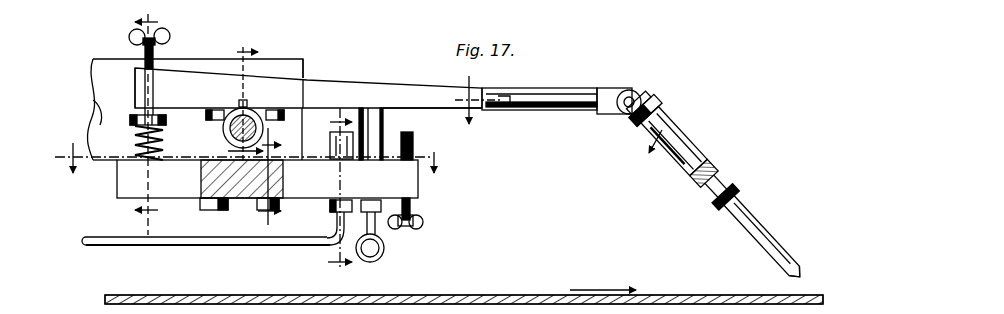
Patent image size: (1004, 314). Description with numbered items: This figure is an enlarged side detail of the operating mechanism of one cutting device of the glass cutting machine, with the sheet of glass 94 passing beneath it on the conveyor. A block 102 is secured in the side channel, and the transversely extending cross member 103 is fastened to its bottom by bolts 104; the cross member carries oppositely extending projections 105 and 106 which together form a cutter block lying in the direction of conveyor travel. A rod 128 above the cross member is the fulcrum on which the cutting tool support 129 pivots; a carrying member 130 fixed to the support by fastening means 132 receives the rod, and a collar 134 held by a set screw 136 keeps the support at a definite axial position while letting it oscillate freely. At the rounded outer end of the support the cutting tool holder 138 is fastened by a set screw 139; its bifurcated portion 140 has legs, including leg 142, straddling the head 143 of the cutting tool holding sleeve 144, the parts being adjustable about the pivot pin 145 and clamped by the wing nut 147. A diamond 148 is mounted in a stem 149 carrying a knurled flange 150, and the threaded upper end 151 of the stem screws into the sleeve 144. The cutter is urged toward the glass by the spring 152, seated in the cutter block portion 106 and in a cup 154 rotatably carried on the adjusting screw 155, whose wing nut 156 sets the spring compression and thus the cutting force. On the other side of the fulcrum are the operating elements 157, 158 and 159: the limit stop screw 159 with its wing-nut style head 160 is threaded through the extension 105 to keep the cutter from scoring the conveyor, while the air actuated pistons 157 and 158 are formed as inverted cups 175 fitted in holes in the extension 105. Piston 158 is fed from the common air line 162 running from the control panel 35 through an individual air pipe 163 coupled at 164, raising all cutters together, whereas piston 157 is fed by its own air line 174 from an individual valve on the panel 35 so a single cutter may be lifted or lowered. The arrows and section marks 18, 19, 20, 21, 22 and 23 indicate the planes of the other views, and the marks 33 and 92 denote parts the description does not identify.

The section line 18- 18 is at (162, 123).
The section line 19- 19 is at (230, 94).
The section line 20- 20 is at (275, 177).
The section line 21- 21 is at (559, 119).
The section line 22- 22 is at (329, 200).
The section line 23- 23 is at (265, 148).
The guide member 33 is at (570, 112).
The control panel 35 is at (221, 249).
The support bracket 92 is at (96, 61).
The sheet of glass 94 is at (535, 295).
The block 102 is at (304, 60).
The cross member 103 is at (201, 202).
The bolts 104 is at (217, 209).
The projection 105 is at (418, 189).
The projection 106 is at (117, 183).
The rod 128 is at (247, 108).
The cutting tool support 129 is at (386, 68).
The carrying member 130 is at (305, 81).
The fastening means 132 is at (167, 120).
The collar 134 is at (237, 107).
The set screw 136 is at (248, 86).
The cutting tool holder 138 is at (578, 84).
The set screw 139 is at (502, 110).
The bifurcated portion 140 is at (632, 90).
The leg 142 is at (633, 92).
The head 143 is at (657, 114).
The cutting tool holding sleeve 144 is at (687, 137).
The pivot pin 145 is at (604, 114).
The wing nut 147 is at (622, 126).
The diamond 148 is at (797, 279).
The stem 149 is at (760, 224).
The knurled flange 150 is at (737, 187).
The threaded upper end 151 is at (713, 166).
The spring 152 is at (134, 140).
The cup 154 is at (128, 110).
The adjusting screw 155 is at (158, 56).
The wing nut 156 is at (129, 37).
The piston 157 is at (327, 162).
The air actuated piston 158 is at (388, 108).
The limit stop 159 is at (414, 134).
The wing nut style head 160 is at (421, 220).
The air line 162 is at (371, 262).
The individual air pipe 163 is at (380, 236).
The coupling 164 is at (388, 194).
The air line 174 is at (306, 249).
The inverted cup 175 is at (383, 127).